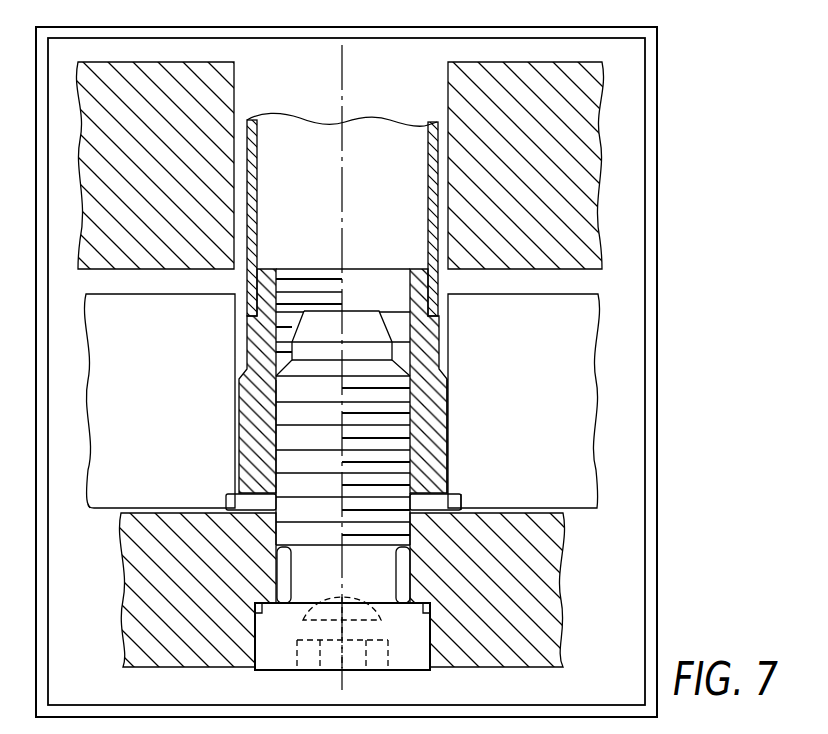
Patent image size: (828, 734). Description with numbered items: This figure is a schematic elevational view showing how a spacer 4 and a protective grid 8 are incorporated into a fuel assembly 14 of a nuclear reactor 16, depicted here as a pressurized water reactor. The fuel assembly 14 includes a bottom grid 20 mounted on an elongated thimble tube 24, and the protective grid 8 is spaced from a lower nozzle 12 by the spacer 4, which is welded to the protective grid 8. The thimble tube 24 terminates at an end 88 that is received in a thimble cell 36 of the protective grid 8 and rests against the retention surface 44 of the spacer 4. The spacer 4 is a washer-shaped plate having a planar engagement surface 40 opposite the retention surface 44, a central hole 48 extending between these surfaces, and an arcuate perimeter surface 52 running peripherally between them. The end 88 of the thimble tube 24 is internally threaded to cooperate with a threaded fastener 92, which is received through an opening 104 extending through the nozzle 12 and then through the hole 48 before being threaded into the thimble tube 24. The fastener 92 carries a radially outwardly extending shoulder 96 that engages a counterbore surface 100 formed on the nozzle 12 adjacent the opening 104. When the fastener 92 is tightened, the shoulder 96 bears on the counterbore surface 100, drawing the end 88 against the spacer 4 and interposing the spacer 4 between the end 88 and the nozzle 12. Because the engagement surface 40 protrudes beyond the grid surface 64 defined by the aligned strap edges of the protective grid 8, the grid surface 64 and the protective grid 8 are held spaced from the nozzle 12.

The spacer 4 is at (478, 486).
The protective grid 8 is at (606, 348).
The lower nozzle 12 is at (474, 667).
The fuel assembly 14 is at (645, 188).
The nuclear reactor 16 is at (657, 73).
The bottom grid 20 is at (601, 163).
The thimble tube 24 is at (440, 135).
The thimble cell 36 is at (441, 322).
The engagement surface 40 is at (457, 512).
The retention surface 44 is at (447, 477).
The hole 48 is at (283, 471).
The perimeter surface 52 is at (227, 499).
The grid surface 64 is at (108, 512).
The end 88 is at (421, 522).
The threaded fastener 92 is at (270, 670).
The shoulder 96 is at (284, 601).
The counterbore surface 100 is at (388, 606).
The opening 104 is at (398, 578).